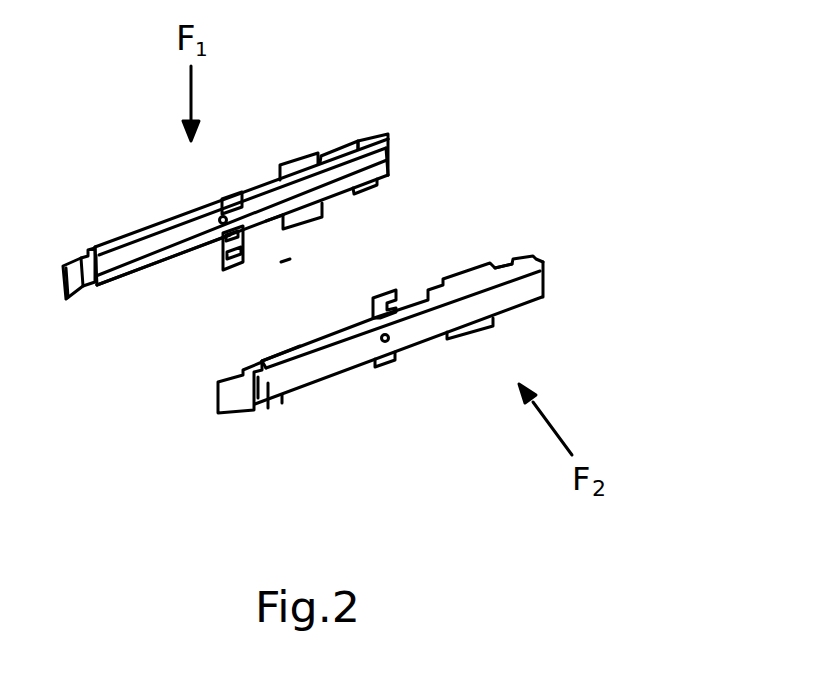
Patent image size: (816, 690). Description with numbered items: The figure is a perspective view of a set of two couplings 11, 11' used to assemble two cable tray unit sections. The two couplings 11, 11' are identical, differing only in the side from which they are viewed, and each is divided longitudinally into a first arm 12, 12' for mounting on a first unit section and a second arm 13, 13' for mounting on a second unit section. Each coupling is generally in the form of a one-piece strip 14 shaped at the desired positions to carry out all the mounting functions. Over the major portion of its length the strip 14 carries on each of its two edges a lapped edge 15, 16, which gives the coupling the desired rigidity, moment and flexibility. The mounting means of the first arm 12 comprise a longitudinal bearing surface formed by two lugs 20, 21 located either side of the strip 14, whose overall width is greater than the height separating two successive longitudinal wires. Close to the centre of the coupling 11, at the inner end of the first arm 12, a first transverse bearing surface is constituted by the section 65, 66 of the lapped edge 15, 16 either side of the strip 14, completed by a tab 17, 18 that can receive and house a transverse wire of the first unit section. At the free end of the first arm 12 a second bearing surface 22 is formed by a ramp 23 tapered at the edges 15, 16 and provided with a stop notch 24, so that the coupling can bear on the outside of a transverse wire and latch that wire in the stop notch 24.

The coupling 11 is at (247, 158).
The coupling 11' is at (399, 394).
The first arm 12 is at (325, 216).
The first arm 12' is at (465, 341).
The second arm 13 is at (146, 294).
The second arm 13' is at (305, 410).
The strip 14 is at (282, 395).
The lapped edge 15 is at (112, 287).
The lapped edge 16 is at (139, 231).
The tab 17 is at (226, 266).
The tab 18 is at (231, 196).
The lug 20 is at (284, 263).
The lug 21 is at (316, 155).
The second bearing surface 22 is at (396, 180).
The ramp 23 is at (539, 262).
The stop notch 24 is at (392, 192).
The section of the lapped edge 65 is at (272, 233).
The section of the lapped edge 66 is at (257, 183).